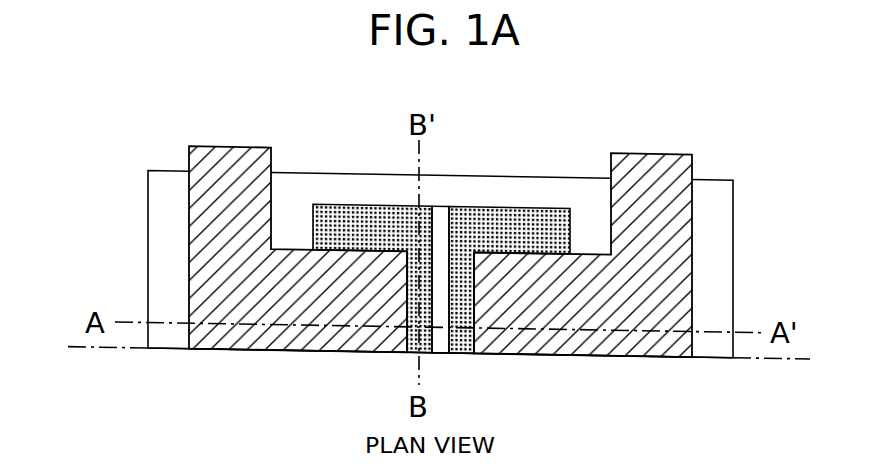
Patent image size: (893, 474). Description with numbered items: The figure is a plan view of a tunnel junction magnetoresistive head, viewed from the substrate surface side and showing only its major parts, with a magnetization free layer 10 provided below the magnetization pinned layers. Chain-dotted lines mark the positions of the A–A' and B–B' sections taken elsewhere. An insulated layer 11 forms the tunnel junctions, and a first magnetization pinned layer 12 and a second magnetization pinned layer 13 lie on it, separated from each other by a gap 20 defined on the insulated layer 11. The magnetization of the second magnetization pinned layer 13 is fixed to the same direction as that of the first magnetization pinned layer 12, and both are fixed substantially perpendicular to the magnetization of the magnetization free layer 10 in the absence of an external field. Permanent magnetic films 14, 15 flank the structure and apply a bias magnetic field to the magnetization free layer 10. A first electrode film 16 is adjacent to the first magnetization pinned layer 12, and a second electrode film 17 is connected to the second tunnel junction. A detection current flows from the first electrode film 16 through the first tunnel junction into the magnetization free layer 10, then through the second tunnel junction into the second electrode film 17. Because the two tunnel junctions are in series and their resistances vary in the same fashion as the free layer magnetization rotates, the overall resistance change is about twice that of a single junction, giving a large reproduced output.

The magnetization free layer 10 is at (438, 340).
The insulated layer 11 is at (710, 209).
The first magnetization pinned layer 12 is at (522, 217).
The second magnetization pinned layer 13 is at (360, 212).
The permanent magnetic film 14 is at (593, 222).
The permanent magnetic film 15 is at (287, 216).
The first electrode film 16 is at (652, 159).
The second electrode film 17 is at (231, 153).
The gap 20 is at (438, 290).